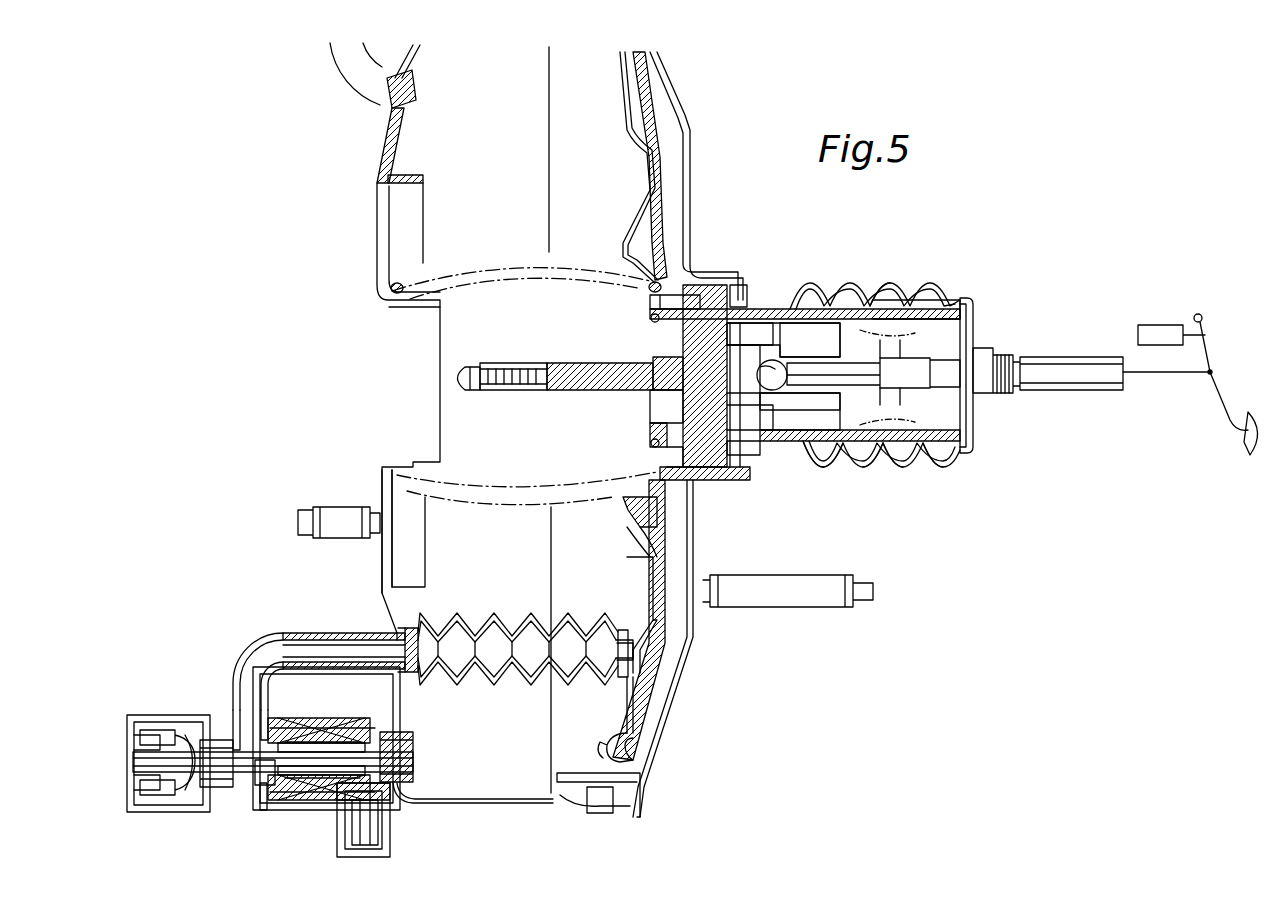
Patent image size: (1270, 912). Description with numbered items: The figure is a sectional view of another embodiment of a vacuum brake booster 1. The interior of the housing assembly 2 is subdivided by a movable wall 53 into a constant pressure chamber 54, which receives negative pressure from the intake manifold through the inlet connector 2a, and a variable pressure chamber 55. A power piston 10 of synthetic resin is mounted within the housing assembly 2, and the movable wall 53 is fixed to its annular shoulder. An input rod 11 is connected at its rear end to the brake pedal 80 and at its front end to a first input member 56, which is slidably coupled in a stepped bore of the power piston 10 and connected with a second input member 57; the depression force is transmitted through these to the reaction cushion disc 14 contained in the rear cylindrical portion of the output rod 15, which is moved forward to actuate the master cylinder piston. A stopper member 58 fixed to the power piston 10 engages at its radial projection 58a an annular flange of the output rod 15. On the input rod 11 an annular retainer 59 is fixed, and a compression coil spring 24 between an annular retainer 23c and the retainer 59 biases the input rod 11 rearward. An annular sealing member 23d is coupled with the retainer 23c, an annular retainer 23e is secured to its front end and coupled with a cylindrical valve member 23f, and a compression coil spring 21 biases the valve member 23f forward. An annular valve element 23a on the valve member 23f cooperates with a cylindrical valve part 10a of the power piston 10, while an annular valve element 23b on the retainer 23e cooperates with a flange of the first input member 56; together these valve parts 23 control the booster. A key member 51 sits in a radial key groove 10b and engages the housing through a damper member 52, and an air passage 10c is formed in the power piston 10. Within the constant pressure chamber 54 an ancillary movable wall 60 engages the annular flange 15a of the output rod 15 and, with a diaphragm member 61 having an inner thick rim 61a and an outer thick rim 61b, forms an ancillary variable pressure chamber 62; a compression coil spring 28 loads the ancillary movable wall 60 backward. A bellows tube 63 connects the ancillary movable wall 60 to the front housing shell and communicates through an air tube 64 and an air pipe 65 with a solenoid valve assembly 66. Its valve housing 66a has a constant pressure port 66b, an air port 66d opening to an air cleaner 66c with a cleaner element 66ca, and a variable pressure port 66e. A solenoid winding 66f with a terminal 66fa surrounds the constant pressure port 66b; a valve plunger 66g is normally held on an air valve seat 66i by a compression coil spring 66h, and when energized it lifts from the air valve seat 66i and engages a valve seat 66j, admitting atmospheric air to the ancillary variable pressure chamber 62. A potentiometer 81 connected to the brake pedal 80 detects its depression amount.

The vacuum brake booster 1 is at (683, 70).
The housing assembly 2 is at (416, 62).
The inlet connector 2a is at (340, 68).
The power piston 10 is at (838, 308).
The cylindrical valve part 10a is at (787, 445).
The radial key groove 10b is at (800, 322).
The air passage 10c is at (745, 460).
The input rod 11 is at (982, 362).
The reaction cushion disc 14 is at (652, 350).
The output rod 15 is at (562, 364).
The annular flange 15a is at (650, 443).
The compression coil spring 21 is at (873, 393).
The boot 23 is at (862, 283).
The annular valve element 23a is at (812, 470).
The annular valve element 23b is at (892, 470).
The annular retainer 23c is at (895, 290).
The annular sealing member 23d is at (915, 470).
The annular retainer 23e is at (856, 470).
The cylindrical valve member 23f is at (830, 470).
The compression coil spring 24 is at (935, 300).
The compression coil spring 28 is at (455, 275).
The key member 51 is at (715, 482).
The damper member 52 is at (750, 290).
The movable wall 53 is at (665, 112).
The constant pressure chamber 54 is at (502, 104).
The variable pressure chamber 55 is at (683, 192).
The first input member 56 is at (790, 308).
The second input member 57 is at (652, 414).
The stopper member 58 is at (650, 300).
The radial projection 58a is at (650, 318).
The annular retainer 59 is at (968, 340).
The ancillary movable wall 60 is at (628, 545).
The diaphragm member 61 is at (645, 560).
The inner peripheral thick rim 61a is at (623, 505).
The outer peripheral thick rim 61b is at (608, 748).
The ancillary variable pressure chamber 62 is at (624, 640).
The bellows tube 63 is at (518, 614).
The air tube 64 is at (395, 633).
The air pipe 65 is at (320, 633).
The solenoid valve assembly 66 is at (288, 738).
The valve housing 66a is at (338, 722).
The constant pressure port 66b is at (413, 756).
The air cleaner 66c is at (160, 710).
The cleaner element 66ca is at (186, 800).
The air port 66d is at (218, 740).
The variable pressure port 66e is at (236, 678).
The solenoid winding 66f is at (300, 805).
The terminal 66fa is at (393, 822).
The valve plunger 66g is at (258, 790).
The compression coil spring 66h is at (292, 800).
The air valve seat 66i is at (287, 725).
The valve seat 66j is at (312, 728).
The brake pedal 80 is at (1210, 352).
The potentiometer 81 is at (1160, 325).